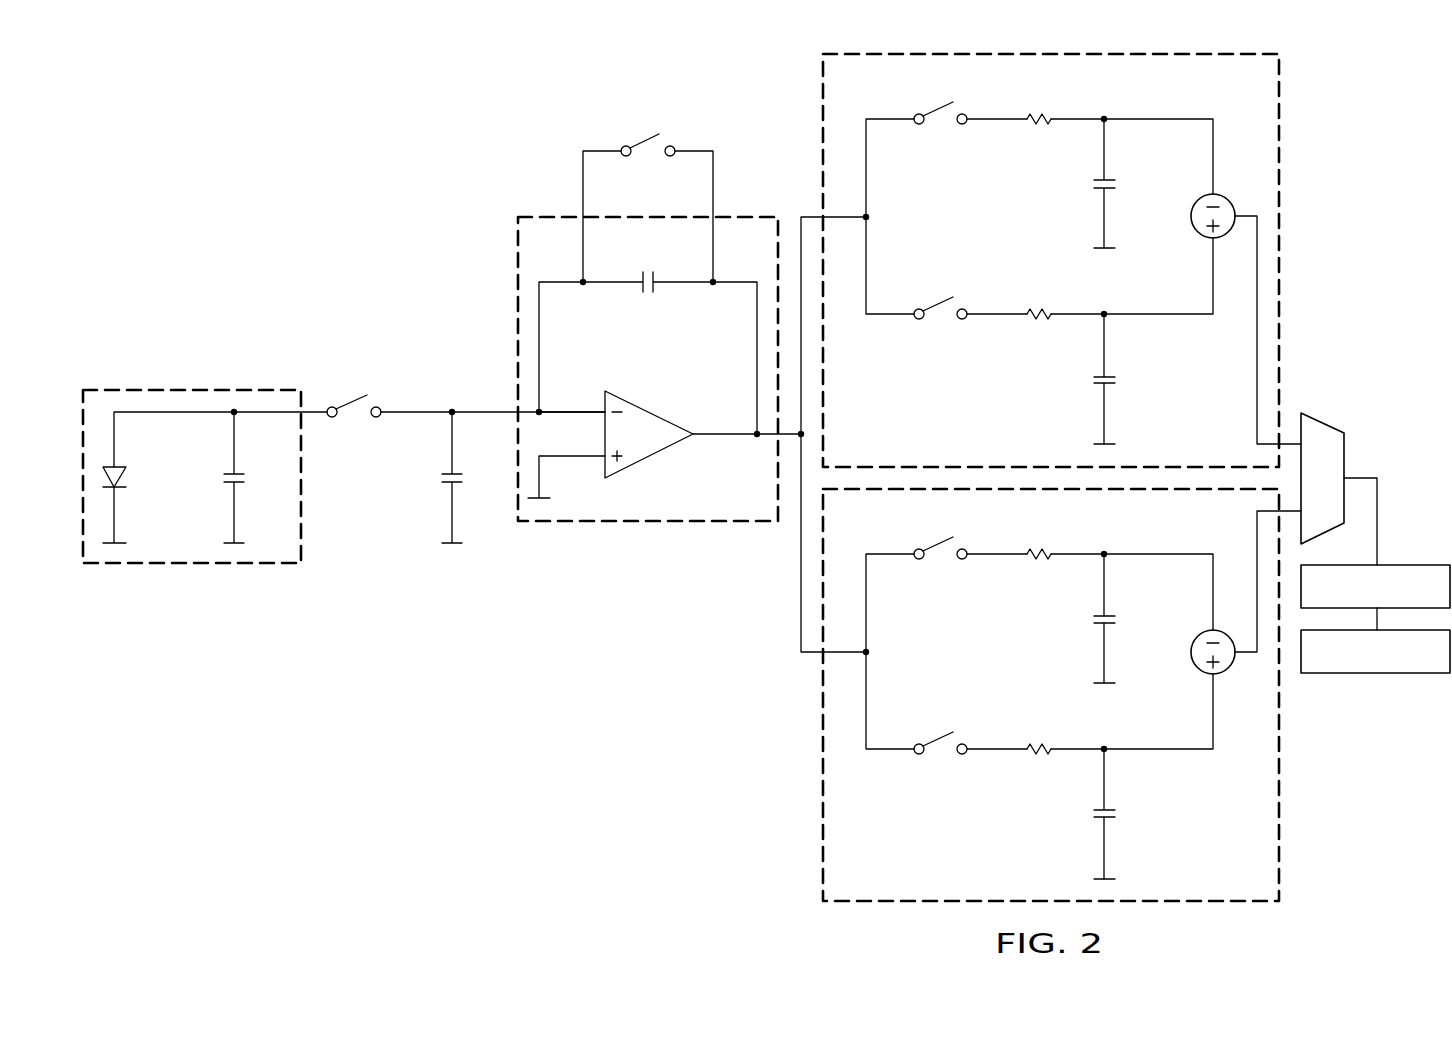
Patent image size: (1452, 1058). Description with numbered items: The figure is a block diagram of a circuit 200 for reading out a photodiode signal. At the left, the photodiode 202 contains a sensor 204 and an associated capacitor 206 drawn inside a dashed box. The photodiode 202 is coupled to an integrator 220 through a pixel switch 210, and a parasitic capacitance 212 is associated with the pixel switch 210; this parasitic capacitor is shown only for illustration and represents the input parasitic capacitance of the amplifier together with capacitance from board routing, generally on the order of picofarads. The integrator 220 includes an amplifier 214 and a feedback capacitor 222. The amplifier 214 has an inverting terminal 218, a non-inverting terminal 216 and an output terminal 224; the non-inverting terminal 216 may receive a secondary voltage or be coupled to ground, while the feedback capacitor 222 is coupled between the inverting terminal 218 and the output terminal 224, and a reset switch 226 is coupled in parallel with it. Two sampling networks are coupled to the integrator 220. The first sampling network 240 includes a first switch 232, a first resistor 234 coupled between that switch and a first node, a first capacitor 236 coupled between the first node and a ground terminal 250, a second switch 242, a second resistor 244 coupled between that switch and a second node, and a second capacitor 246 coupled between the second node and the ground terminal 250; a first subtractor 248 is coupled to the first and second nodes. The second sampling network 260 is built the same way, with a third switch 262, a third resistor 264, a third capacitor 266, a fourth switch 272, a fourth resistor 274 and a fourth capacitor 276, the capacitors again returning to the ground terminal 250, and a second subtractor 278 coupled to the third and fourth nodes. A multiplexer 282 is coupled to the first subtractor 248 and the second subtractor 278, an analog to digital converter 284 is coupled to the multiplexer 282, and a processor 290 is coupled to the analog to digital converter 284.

The circuit 200 is at (414, 102).
The photodiode 202 is at (205, 510).
The sensor 204 is at (123, 478).
The capacitor Ca 206 is at (223, 472).
The pixel switch PS 210 is at (359, 418).
The parasitic capacitance Cp 212 is at (442, 478).
The amplifier 214 is at (648, 454).
The non-inverting terminal 216 is at (600, 460).
The inverting terminal 218 is at (594, 412).
The integrator 220 is at (659, 350).
The feedback capacitor Cfb 222 is at (648, 296).
The output terminal 224 is at (697, 430).
The reset switch RS 226 is at (648, 156).
The first switch S1 232 is at (944, 125).
The first resistor R1 234 is at (1041, 126).
The first capacitor C1 236 is at (1092, 185).
The first sampling network 240 is at (1093, 260).
The second switch S2 242 is at (944, 321).
The second resistor R2 244 is at (1041, 322).
The second capacitor C2 246 is at (1092, 382).
The first subtractor 248 is at (1224, 198).
The ground terminal 250 is at (1116, 246).
The second sampling network 260 is at (1093, 695).
The third switch S3 262 is at (944, 560).
The third resistor R3 264 is at (1041, 561).
The third capacitor C3 266 is at (1092, 621).
The fourth switch S4 272 is at (944, 755).
The fourth resistor R4 274 is at (1041, 756).
The fourth capacitor C4 276 is at (1092, 817).
The second subtractor 278 is at (1224, 672).
The multiplexer 282 is at (1348, 466).
The analog to digital converter (ADC) 284 is at (1397, 564).
The processor 290 is at (1387, 674).